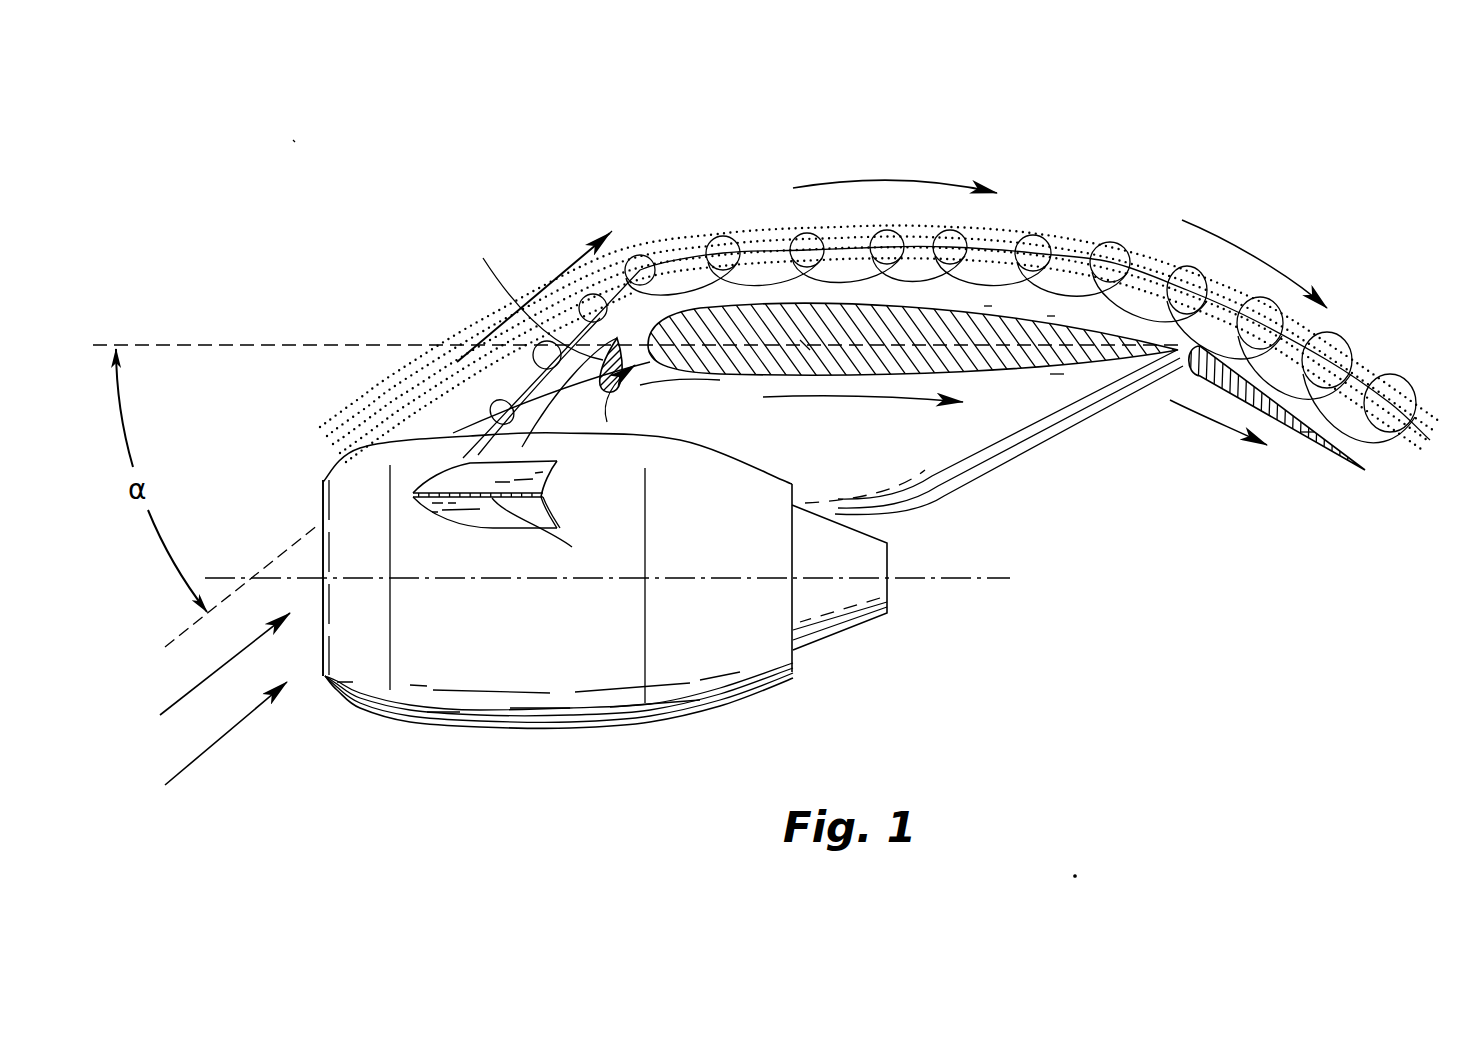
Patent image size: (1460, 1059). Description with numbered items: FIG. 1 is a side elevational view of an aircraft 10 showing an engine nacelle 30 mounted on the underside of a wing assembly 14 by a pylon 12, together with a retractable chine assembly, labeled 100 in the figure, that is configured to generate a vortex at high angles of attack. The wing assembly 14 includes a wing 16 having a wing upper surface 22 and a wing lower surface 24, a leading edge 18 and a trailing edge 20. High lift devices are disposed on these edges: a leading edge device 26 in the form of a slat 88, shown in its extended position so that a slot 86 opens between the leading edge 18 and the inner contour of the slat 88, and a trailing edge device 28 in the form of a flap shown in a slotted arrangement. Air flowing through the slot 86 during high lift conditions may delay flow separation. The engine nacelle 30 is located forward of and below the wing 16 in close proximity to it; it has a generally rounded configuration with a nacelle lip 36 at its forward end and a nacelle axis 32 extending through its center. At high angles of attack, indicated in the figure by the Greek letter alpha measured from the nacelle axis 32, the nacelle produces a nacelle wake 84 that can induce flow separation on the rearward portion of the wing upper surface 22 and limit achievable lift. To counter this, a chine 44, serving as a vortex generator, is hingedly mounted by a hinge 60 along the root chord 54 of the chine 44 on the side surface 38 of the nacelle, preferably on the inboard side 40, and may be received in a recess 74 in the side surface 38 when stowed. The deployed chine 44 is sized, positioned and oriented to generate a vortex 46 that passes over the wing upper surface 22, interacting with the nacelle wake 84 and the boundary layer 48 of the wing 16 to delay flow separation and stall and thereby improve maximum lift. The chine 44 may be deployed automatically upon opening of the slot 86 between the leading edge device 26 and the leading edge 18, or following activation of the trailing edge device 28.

The aircraft 10 is at (293, 140).
The pylon 12 is at (988, 473).
The wing assembly 14 is at (672, 190).
The wing 16 is at (707, 375).
The leading edge 18 is at (668, 278).
The trailing edge 20 is at (1353, 463).
The wing upper surface 22 is at (988, 308).
The wing lower surface 24 is at (1057, 374).
The leading edge device 26 is at (517, 293).
The trailing edge device 28 is at (1308, 432).
The engine nacelle 30 is at (530, 727).
The nacelle axis 32 is at (480, 628).
The nacelle lip 36 is at (324, 672).
The side surface 38 is at (572, 645).
The inboard side 40 is at (620, 612).
The chine 44 is at (533, 472).
The vortex 46 is at (713, 240).
The boundary layer 48 is at (1051, 318).
The root chord 54 is at (805, 345).
The hinge 60 is at (552, 530).
The recess 74 is at (523, 512).
The nacelle wake 84 is at (407, 363).
The slot 86 is at (660, 387).
The slat 88 is at (610, 368).
The vortex generator 100 is at (420, 465).